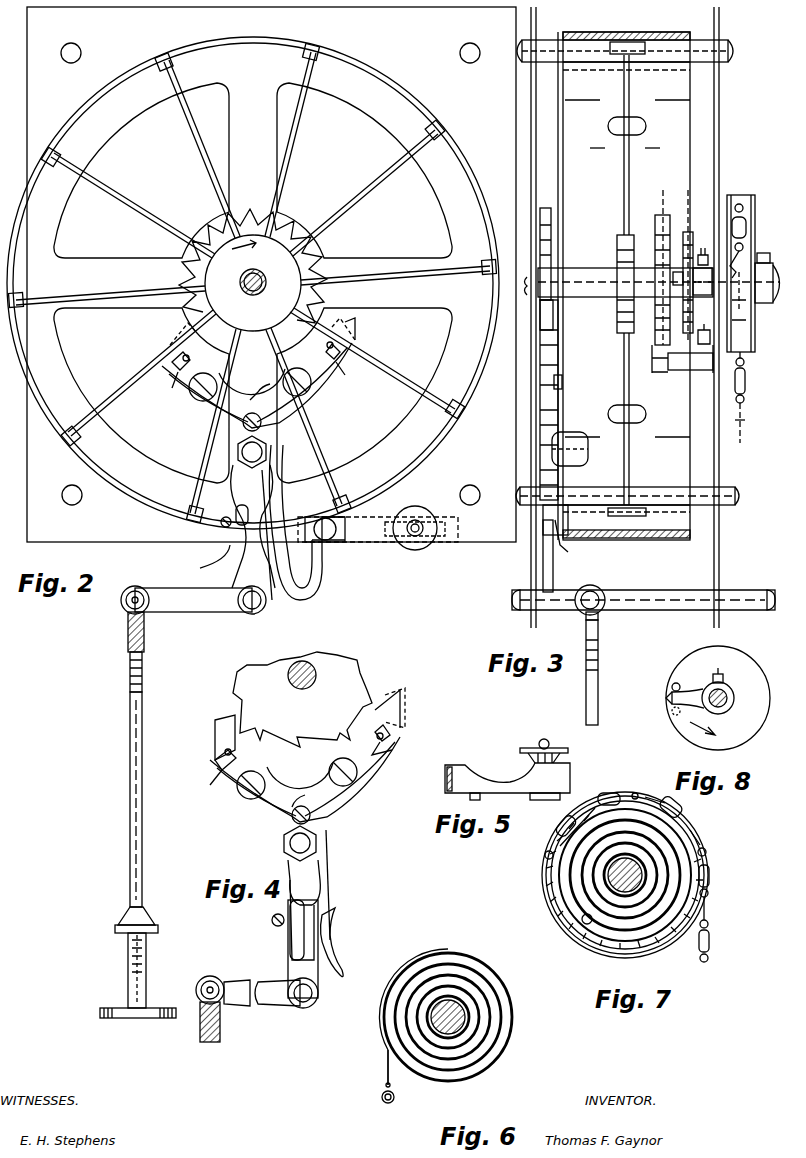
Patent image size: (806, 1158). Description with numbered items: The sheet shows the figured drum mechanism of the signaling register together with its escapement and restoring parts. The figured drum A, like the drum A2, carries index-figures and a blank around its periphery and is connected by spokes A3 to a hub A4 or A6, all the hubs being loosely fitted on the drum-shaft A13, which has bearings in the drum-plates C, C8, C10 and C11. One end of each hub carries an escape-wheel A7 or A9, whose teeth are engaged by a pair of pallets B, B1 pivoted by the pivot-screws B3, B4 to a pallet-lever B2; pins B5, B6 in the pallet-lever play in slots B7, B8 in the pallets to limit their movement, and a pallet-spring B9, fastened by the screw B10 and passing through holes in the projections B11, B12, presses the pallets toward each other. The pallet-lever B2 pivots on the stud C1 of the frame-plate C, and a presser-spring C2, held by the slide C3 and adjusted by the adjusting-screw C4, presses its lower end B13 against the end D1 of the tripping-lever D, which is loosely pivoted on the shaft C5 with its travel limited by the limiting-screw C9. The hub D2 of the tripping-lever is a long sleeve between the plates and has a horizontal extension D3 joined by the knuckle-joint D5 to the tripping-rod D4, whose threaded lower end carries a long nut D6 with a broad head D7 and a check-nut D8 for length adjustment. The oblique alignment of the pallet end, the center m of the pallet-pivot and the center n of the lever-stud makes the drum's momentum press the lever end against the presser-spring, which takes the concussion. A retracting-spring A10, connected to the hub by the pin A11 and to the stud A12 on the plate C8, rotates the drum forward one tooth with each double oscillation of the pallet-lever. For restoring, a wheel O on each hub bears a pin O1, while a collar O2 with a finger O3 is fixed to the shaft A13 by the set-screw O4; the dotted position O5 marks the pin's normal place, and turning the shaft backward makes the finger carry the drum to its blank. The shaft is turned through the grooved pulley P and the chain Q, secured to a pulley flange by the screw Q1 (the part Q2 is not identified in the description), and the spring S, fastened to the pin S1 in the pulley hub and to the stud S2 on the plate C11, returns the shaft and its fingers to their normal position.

In FIG. 2, the figured drum A is at (408, 80).
In FIG. 3, the figured drum A2 is at (635, 32).
In FIG. 2, the spokes A3 is at (128, 196).
In FIG. 3, the spokes A3 is at (631, 93).
In FIG. 2, the hub A4 is at (266, 283).
In FIG. 3, the hub A6 is at (568, 274).
In FIG. 2, the escape-wheel A7 is at (253, 270).
In FIG. 4, the escape-wheel A7 is at (302, 699).
In FIG. 3, the escape-wheel A9 is at (546, 207).
In FIG. 3, the retracting-spring A10 is at (655, 352).
In FIG. 6, the retracting-spring A10 is at (386, 1060).
In FIG. 6, the pin A11 is at (430, 1005).
In FIG. 3, the stud A12 is at (655, 387).
In FIG. 6, the stud A12 is at (381, 1097).
In FIG. 2, the drum-shaft A13 is at (244, 286).
In FIG. 3, the drum-shaft A13 is at (775, 313).
In FIG. 4, the drum-shaft A13 is at (317, 675).
In FIG. 6, the drum-shaft A13 is at (462, 1022).
In FIG. 7, the drum-shaft A13 is at (645, 862).
In FIG. 8, the drum-shaft A13 is at (728, 694).
In FIG. 3, the pallet B is at (560, 332).
In FIG. 4, the pallet B is at (213, 724).
In FIG. 2, the pallet B1 is at (172, 333).
In FIG. 3, the pallet B1 is at (556, 312).
In FIG. 4, the pallet B1 is at (400, 705).
In FIG. 2, the pallet-lever B2 is at (252, 413).
In FIG. 3, the pallet-lever B2 is at (558, 418).
In FIG. 4, the pallet-lever B2 is at (294, 811).
In FIG. 2, the pivot-screw B3 is at (198, 402).
In FIG. 3, the pivot-screw B3 is at (562, 379).
In FIG. 4, the pivot-screw B3 is at (246, 796).
In FIG. 2, the pivot-screw B4 is at (312, 392).
In FIG. 4, the pivot-screw B4 is at (356, 786).
In FIG. 2, the pin B5 is at (195, 366).
In FIG. 4, the pin B5 is at (236, 750).
In FIG. 2, the pin B6 is at (323, 353).
In FIG. 4, the pin B6 is at (376, 735).
In FIG. 2, the slot B7 is at (169, 385).
In FIG. 4, the slot B7 is at (217, 752).
In FIG. 2, the slot B8 is at (345, 367).
In FIG. 4, the slot B8 is at (377, 750).
In FIG. 2, the pallet-spring B9 is at (300, 388).
In FIG. 4, the pallet-spring B9 is at (345, 805).
In FIG. 2, the screw B10 is at (261, 390).
In FIG. 4, the screw B10 is at (309, 790).
In FIG. 2, the projection B11 is at (172, 360).
In FIG. 4, the projection B11 is at (206, 784).
In FIG. 2, the projection B12 is at (350, 352).
In FIG. 4, the projection B12 is at (398, 728).
In FIG. 2, the lower end of pallet-lever B13 is at (266, 535).
In FIG. 3, the lower end of pallet-lever B13 is at (560, 490).
In FIG. 4, the lower end of pallet-lever B13 is at (330, 895).
In FIG. 2, the drum frame-plate C is at (271, 274).
In FIG. 3, the drum frame-plate C is at (520, 612).
In FIG. 2, the stud C1 is at (240, 458).
In FIG. 4, the stud C1 is at (288, 843).
In FIG. 2, the presser-spring C2 is at (325, 588).
In FIG. 4, the presser-spring C2 is at (338, 945).
In FIG. 2, the slide C3 is at (367, 538).
In FIG. 5, the slide C3 is at (465, 770).
In FIG. 2, the adjusting-screw C4 is at (414, 540).
In FIG. 5, the adjusting-screw C4 is at (544, 744).
In FIG. 2, the shaft C5 is at (262, 602).
In FIG. 3, the shaft C5 is at (512, 595).
In FIG. 4, the shaft C5 is at (312, 993).
In FIG. 3, the frame-plate C8 is at (720, 620).
In FIG. 2, the limiting-screw C9 is at (220, 526).
In FIG. 4, the limiting-screw C9 is at (272, 920).
In FIG. 3, the drum-plate C10 is at (538, 26).
In FIG. 3, the drum-plate C11 is at (720, 30).
In FIG. 2, the tripping-lever D is at (222, 570).
In FIG. 3, the tripping-lever D is at (553, 580).
In FIG. 4, the tripping-lever D is at (303, 949).
In FIG. 2, the end of tripping-lever D1 is at (236, 505).
In FIG. 4, the end of tripping-lever D1 is at (288, 904).
In FIG. 3, the hub of tripping-lever D2 is at (615, 590).
In FIG. 2, the horizontal extension D3 is at (193, 600).
In FIG. 3, the horizontal extension D3 is at (593, 586).
In FIG. 4, the horizontal extension D3 is at (272, 1000).
In FIG. 2, the tripping-rod D4 is at (130, 738).
In FIG. 3, the tripping-rod D4 is at (586, 690).
In FIG. 2, the knuckle-joint D5 is at (124, 606).
In FIG. 3, the knuckle-joint D5 is at (600, 614).
In FIG. 4, the knuckle-joint D5 is at (220, 976).
In FIG. 2, the long nut D6 is at (128, 996).
In FIG. 2, the broad head D7 is at (100, 1013).
In FIG. 2, the check-nut D8 is at (114, 927).
In FIG. 2, the center of pallet-pivot m is at (205, 380).
In FIG. 2, the center of pallet lever-stud n is at (268, 454).
In FIG. 3, the wheel O is at (690, 234).
In FIG. 8, the wheel O is at (697, 660).
In FIG. 3, the pin O1 is at (700, 296).
In FIG. 8, the pin O1 is at (670, 686).
In FIG. 3, the collar O2 is at (706, 250).
In FIG. 8, the collar O2 is at (722, 688).
In FIG. 3, the finger O3 is at (671, 267).
In FIG. 8, the finger O3 is at (670, 700).
In FIG. 8, the set-screw O4 is at (722, 674).
In FIG. 8, the normal position of pin O5 is at (670, 720).
In FIG. 3, the grooved pulley P is at (752, 248).
In FIG. 7, the grooved pulley P is at (545, 892).
In FIG. 3, the chain Q is at (747, 388).
In FIG. 7, the chain Q is at (710, 934).
In FIG. 3, the screw Q1 is at (743, 268).
In FIG. 7, the chain links Q2 is at (548, 847).
In FIG. 7, the spring S is at (565, 905).
In FIG. 7, the pin S1 is at (605, 878).
In FIG. 3, the stud S2 is at (700, 344).
In FIG. 7, the stud S2 is at (583, 923).